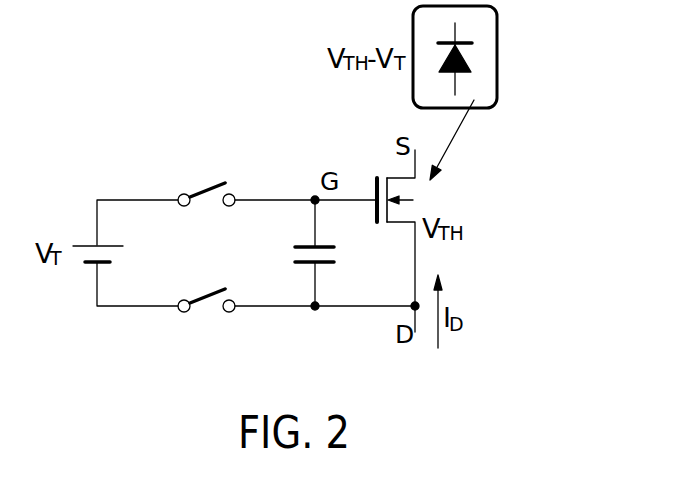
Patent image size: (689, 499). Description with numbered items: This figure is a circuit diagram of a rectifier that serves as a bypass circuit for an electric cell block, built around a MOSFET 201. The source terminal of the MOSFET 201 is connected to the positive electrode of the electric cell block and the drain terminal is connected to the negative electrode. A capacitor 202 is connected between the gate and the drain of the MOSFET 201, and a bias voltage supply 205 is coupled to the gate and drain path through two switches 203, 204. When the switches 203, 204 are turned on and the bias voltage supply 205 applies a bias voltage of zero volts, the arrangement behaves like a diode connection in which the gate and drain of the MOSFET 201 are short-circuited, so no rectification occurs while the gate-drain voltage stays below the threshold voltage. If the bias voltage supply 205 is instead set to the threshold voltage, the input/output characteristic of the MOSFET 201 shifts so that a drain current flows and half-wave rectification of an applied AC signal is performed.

The MOSFET 201 is at (430, 200).
The capacitor 202 is at (288, 257).
The switch 203 is at (207, 178).
The switch 204 is at (207, 318).
The bias voltage supply 205 is at (92, 268).